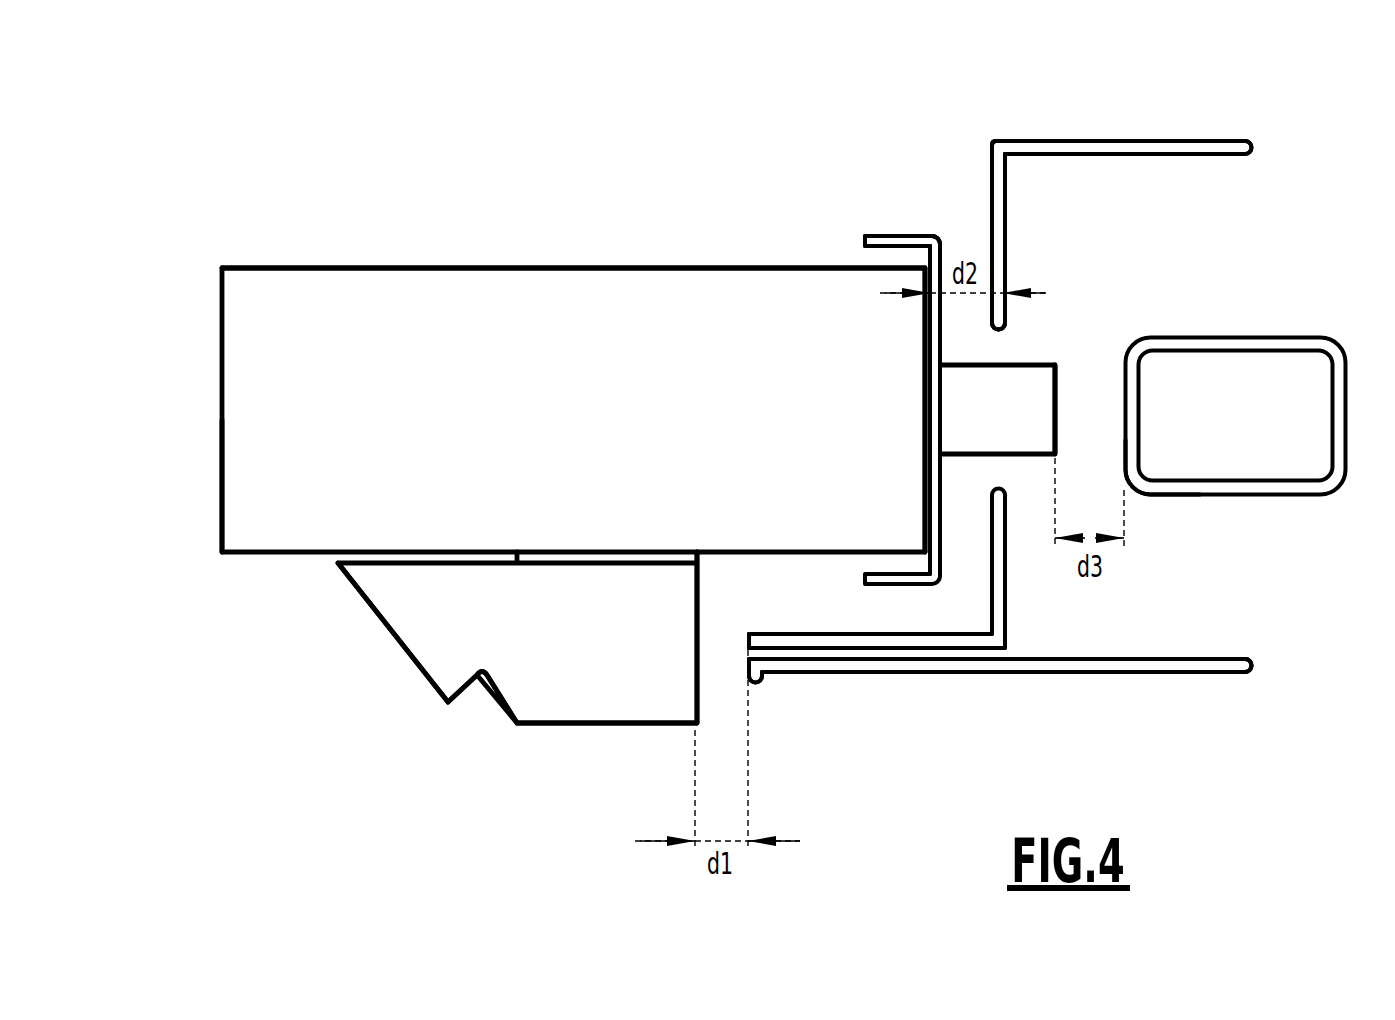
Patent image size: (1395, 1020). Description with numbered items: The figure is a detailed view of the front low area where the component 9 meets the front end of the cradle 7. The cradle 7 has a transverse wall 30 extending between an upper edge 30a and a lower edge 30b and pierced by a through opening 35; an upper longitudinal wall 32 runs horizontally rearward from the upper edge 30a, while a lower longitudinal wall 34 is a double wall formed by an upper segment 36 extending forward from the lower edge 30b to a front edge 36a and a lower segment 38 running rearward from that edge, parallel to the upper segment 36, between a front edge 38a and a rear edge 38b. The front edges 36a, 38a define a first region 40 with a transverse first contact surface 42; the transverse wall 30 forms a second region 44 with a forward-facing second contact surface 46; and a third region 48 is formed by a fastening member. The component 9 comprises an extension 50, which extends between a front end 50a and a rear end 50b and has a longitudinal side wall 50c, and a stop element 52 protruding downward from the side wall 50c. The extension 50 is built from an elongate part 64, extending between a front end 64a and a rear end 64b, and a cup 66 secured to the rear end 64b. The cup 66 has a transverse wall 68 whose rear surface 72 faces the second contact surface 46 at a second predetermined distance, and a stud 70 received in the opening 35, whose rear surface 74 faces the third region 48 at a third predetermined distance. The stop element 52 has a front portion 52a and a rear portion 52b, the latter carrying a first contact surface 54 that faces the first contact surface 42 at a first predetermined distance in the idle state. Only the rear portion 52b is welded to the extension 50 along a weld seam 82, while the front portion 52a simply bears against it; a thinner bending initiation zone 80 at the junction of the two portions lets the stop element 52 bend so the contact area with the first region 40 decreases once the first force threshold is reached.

The cradle 7 is at (1283, 223).
The component 9 is at (547, 235).
The transverse wall 30 is at (998, 222).
The upper edge 30a is at (1002, 155).
The lower edge 30b is at (1000, 623).
The upper longitudinal wall 32 is at (1160, 148).
The lower longitudinal wall 34 is at (965, 678).
The through opening 35 is at (1000, 348).
The upper segment 36 is at (887, 640).
The front edge of the upper segment 36a is at (758, 640).
The lower segment 38 is at (1112, 664).
The front edge of the lower segment 38a is at (760, 678).
The rear edge of the lower segment 38b is at (1245, 673).
The first region 40 is at (745, 658).
The first contact surface 42 is at (747, 653).
The second region 44 is at (990, 232).
The second contact surface 46 is at (997, 175).
The third region 48 is at (1128, 494).
The extension 50 is at (620, 265).
The front end 50a is at (218, 513).
The rear end 50b is at (927, 237).
The side wall 50c is at (340, 267).
The stop element 52 is at (540, 704).
The front portion 52a is at (400, 633).
The rear portion 52b is at (589, 702).
The first contact surface 54 is at (700, 655).
The elongate part 64 is at (473, 290).
The front end 64a is at (220, 308).
The rear end 64b is at (930, 268).
The cup 66 is at (885, 240).
The transverse wall 68 is at (938, 527).
The stud 70 is at (1017, 393).
The rear surface 72 is at (942, 507).
The rear surface 74 is at (1057, 405).
The bending initiation zone 80 is at (483, 676).
The weld seam 82 is at (622, 558).